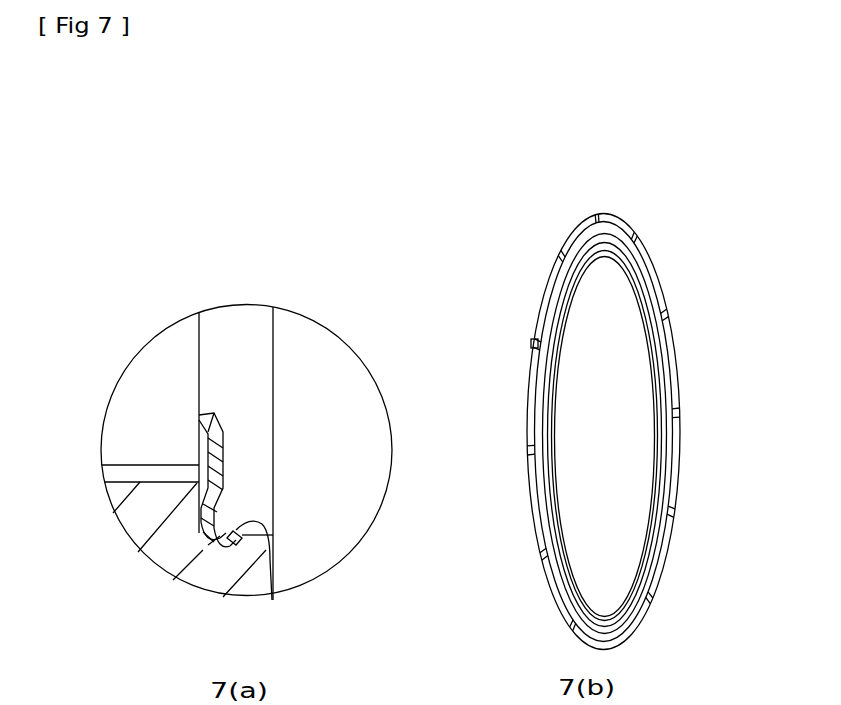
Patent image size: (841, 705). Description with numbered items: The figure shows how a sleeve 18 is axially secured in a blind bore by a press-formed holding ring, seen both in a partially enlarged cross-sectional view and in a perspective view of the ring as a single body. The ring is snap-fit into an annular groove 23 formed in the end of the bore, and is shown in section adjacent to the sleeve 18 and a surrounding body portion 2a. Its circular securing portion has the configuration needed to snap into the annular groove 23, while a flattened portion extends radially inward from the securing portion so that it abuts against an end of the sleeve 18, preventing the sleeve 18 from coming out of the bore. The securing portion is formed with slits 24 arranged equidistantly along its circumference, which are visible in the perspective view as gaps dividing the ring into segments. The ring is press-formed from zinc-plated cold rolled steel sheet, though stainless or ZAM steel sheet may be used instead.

The sleeve 18 is at (137, 432).
The housing body portion 2a is at (193, 556).
The annular groove 23 is at (272, 600).
The slits 24 is at (533, 344).